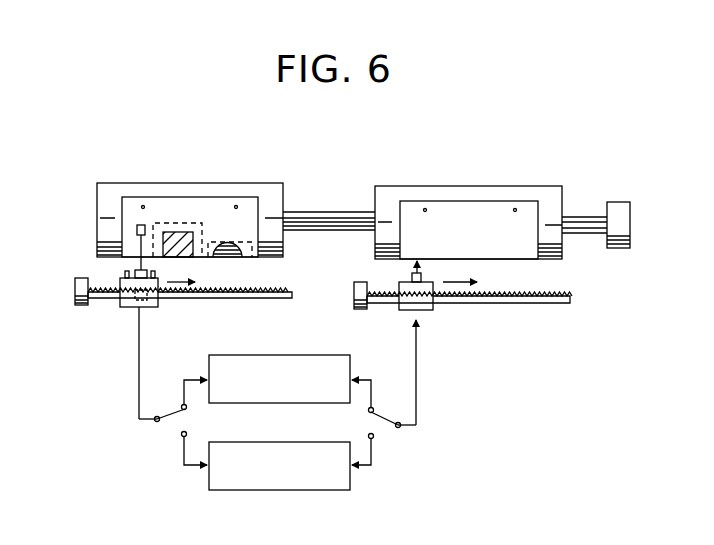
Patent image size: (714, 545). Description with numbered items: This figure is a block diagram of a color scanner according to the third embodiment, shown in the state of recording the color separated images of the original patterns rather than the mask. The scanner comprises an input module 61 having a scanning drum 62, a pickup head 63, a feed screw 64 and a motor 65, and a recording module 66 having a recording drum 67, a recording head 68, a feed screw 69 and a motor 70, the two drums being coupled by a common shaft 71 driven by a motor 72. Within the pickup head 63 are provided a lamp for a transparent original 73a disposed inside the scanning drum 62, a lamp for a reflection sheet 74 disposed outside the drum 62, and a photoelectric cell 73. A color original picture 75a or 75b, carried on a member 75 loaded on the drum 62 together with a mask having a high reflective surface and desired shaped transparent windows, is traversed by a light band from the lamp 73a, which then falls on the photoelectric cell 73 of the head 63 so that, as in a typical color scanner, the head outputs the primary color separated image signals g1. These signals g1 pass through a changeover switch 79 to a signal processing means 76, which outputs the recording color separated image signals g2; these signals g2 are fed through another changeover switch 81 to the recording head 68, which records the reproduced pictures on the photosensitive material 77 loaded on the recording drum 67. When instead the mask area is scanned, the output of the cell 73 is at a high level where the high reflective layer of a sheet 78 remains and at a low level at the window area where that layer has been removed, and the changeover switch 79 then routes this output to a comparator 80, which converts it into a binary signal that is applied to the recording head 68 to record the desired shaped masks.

The input module 61 is at (279, 181).
The scanning drum 62 is at (287, 198).
The pickup head 63 is at (152, 307).
The feed screw 64 is at (265, 299).
The motor 65 is at (75, 292).
The recording module 66 is at (511, 184).
The recording drum 67 is at (562, 198).
The recording head 68 is at (430, 310).
The feed screw 69 is at (552, 304).
The motor 70 is at (360, 310).
The common shaft 71 is at (310, 231).
The motor 72 is at (623, 248).
The photoelectric cell 73 is at (135, 300).
The lamp for a transparent original 73a is at (141, 225).
The lamp for a reflection sheet 74 is at (125, 273).
The member 75 is at (115, 206).
The color original picture 75a is at (180, 223).
The color original picture 75b is at (225, 242).
The signal processing means 76 is at (310, 355).
The photosensitive material 77 is at (550, 260).
The sheet 78 is at (124, 237).
The changeover switch 79 is at (168, 424).
The comparator 80 is at (350, 478).
The changeover switch 81 is at (383, 428).
The primary color separated image signals g1 is at (139, 378).
The recording color separated image signals g2 is at (360, 380).